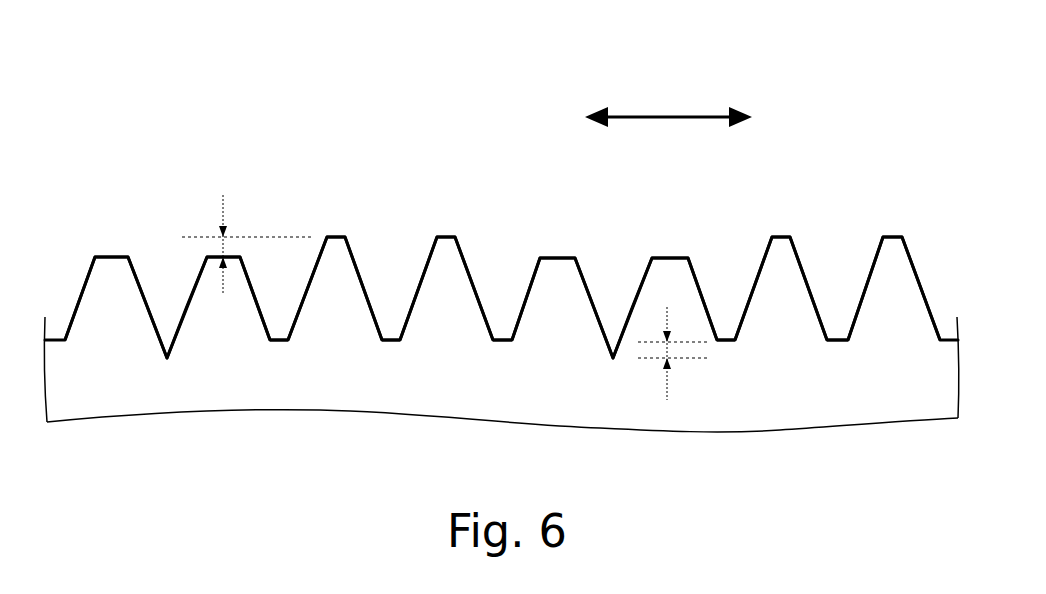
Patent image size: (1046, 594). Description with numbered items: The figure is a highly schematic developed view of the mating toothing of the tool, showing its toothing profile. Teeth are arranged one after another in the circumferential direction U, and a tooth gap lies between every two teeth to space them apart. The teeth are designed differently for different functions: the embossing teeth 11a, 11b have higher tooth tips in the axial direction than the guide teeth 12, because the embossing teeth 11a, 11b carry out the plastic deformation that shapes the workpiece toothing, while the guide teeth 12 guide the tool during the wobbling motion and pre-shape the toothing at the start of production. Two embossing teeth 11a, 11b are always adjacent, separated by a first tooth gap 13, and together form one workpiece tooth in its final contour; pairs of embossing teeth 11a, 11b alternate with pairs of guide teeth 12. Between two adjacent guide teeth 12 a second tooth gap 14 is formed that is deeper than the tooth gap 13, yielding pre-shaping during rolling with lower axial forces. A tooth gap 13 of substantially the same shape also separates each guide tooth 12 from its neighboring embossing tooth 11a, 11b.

The embossing tooth 11a is at (333, 252).
The embossing tooth 11b is at (448, 252).
The guide tooth 12 is at (109, 278).
The tooth gap 13 is at (277, 314).
The second tooth gap 14 is at (166, 320).
The circumferential direction U is at (703, 117).